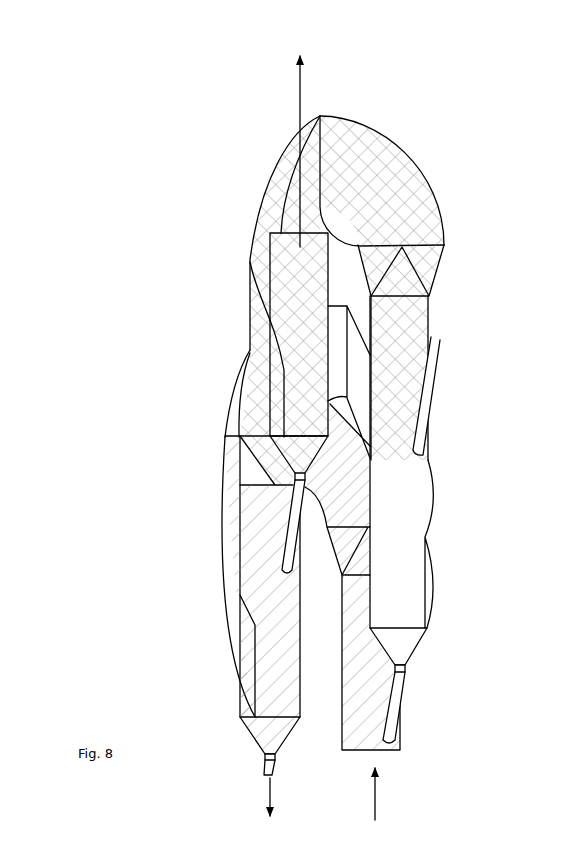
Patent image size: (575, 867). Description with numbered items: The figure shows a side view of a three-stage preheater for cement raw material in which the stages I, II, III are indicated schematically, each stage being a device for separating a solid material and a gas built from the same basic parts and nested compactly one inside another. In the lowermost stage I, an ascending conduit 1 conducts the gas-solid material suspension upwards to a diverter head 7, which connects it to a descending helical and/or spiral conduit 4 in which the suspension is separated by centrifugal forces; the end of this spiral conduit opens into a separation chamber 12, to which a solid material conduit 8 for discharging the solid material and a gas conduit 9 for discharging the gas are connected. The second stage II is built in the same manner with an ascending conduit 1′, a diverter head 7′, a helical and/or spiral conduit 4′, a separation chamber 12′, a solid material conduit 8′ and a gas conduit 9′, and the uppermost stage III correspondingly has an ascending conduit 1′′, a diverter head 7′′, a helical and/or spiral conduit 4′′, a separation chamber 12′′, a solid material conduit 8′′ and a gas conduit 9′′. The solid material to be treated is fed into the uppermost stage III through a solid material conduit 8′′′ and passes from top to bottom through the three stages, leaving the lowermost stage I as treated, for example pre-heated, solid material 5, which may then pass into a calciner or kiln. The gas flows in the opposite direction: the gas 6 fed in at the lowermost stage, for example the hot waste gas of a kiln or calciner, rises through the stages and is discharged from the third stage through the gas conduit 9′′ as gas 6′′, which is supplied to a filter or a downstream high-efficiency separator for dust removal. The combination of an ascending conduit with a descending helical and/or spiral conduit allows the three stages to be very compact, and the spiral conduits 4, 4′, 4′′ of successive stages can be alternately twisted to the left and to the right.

The ascending conduit 1 is at (372, 690).
The ascending conduit 1′ is at (265, 515).
The ascending conduit 1′′ is at (405, 332).
The helical and/or spiral conduit 4 is at (235, 518).
The helical and/or spiral conduit 4′ is at (360, 380).
The helical and/or spiral conduit 4′′ is at (270, 200).
The solid material flow 5 is at (269, 813).
The gas flow 6 is at (374, 808).
The gas 6′′ is at (296, 134).
The diverter head 7 is at (350, 470).
The diverter head 7′ is at (258, 410).
The diverter head 7′′ is at (405, 185).
The solid material conduit 8 is at (263, 765).
The solid material conduit 8′ is at (393, 723).
The solid material conduit 8′′ is at (287, 545).
The solid material conduit 8′′′ is at (425, 417).
The gas conduit 9 is at (270, 593).
The gas conduit 9′ is at (412, 483).
The gas conduit 9′′ is at (292, 272).
The separation chamber 12 is at (275, 703).
The separation chamber 12′ is at (395, 615).
The separation chamber 12′′ is at (303, 410).
The stage I is at (125, 633).
The stage II is at (125, 452).
The stage III is at (125, 265).